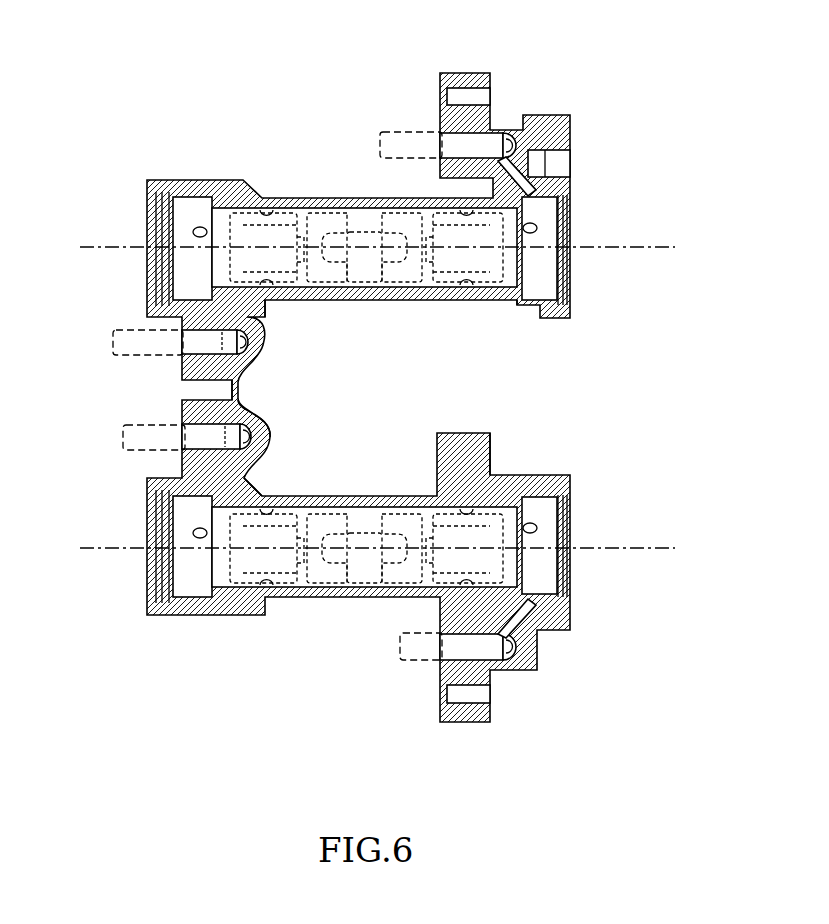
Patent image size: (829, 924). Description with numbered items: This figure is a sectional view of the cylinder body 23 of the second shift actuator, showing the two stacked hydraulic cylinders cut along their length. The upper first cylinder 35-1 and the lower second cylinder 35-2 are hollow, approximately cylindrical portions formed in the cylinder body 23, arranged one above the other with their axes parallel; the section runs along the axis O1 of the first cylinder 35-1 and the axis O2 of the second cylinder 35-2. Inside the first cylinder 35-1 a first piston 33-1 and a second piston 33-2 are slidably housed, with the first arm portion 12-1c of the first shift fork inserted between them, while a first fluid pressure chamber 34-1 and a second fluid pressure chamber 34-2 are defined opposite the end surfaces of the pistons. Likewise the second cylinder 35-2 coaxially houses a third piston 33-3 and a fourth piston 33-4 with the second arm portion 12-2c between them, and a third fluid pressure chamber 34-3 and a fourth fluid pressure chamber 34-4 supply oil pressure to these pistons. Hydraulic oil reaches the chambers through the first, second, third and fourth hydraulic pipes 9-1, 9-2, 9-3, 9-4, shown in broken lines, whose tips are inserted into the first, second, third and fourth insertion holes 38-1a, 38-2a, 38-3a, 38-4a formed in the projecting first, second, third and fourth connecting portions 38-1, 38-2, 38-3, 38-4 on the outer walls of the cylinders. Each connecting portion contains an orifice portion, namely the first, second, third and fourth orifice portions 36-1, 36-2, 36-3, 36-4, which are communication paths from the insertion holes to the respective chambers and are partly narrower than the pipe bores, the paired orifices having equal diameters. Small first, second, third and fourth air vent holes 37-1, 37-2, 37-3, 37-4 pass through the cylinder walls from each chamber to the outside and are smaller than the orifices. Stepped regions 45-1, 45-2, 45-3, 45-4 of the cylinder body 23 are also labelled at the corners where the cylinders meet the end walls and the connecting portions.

The cylinder body 23 is at (249, 135).
The first hydraulic pipe 9-1 is at (113, 328).
The second hydraulic pipe 9-2 is at (422, 132).
The third hydraulic pipe 9-3 is at (123, 450).
The fourth hydraulic pipe 9-4 is at (424, 657).
The first arm portion 12-1c is at (365, 228).
The second arm portion 12-2c is at (365, 600).
The first piston 33-1 is at (290, 204).
The second piston 33-2 is at (428, 197).
The third piston 33-3 is at (295, 598).
The fourth piston 33-4 is at (407, 613).
The first fluid pressure chamber 34-1 is at (223, 263).
The second fluid pressure chamber 34-2 is at (508, 258).
The third fluid pressure chamber 34-3 is at (223, 565).
The fourth fluid pressure chamber 34-4 is at (508, 564).
The first cylinder 35-1 is at (408, 302).
The second cylinder 35-2 is at (397, 494).
The first orifice portion 36-1 is at (250, 343).
The second orifice portion 36-2 is at (572, 162).
The third orifice portion 36-3 is at (252, 447).
The fourth orifice portion 36-4 is at (527, 638).
The first air vent hole 37-1 is at (193, 232).
The second air vent hole 37-2 is at (537, 228).
The third air vent hole 37-3 is at (193, 533).
The fourth air vent hole 37-4 is at (537, 528).
The first connecting portion 38-1 is at (180, 357).
The first insertion hole 38-1a is at (247, 372).
The second connecting portion 38-2 is at (499, 122).
The second insertion hole 38-2a is at (471, 130).
The third connecting portion 38-3 is at (182, 412).
The third insertion hole 38-3a is at (258, 437).
The fourth connecting portion 38-4 is at (492, 678).
The fourth insertion hole 38-4a is at (480, 720).
The step portion 45-1 is at (268, 303).
The step portion 45-2 is at (470, 306).
The step portion 45-3 is at (272, 484).
The step portion 45-4 is at (496, 474).
The axis O1 is at (394, 246).
The axis O2 is at (394, 545).